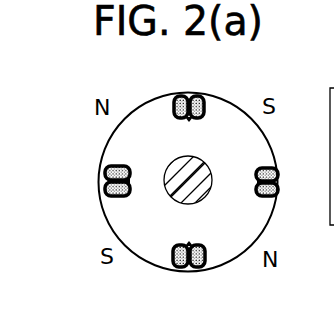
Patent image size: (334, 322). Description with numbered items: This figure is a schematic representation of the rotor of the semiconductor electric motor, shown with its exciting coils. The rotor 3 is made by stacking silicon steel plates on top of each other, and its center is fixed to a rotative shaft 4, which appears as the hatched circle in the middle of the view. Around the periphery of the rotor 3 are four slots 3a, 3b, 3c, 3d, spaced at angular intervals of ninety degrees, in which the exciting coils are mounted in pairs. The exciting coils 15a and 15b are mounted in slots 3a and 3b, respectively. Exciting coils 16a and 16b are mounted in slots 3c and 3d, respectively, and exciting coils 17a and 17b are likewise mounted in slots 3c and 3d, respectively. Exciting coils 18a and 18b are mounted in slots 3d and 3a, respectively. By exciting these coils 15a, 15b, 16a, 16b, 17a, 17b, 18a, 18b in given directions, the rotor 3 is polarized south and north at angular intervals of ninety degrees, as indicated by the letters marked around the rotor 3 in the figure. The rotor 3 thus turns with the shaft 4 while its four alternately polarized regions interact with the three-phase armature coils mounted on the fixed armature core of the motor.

The rotor 3 is at (245, 266).
The slot 3a is at (189, 122).
The slot 3b is at (257, 182).
The slot 3c is at (189, 244).
The slot 3d is at (132, 174).
The rotative shaft 4 is at (205, 196).
The exciting coil 15a is at (202, 98).
The exciting coil 15b is at (270, 168).
The exciting coil 16a is at (272, 198).
The exciting coil 16b is at (202, 268).
The exciting coil 17a is at (175, 267).
The exciting coil 17b is at (106, 191).
The exciting coil 18a is at (106, 169).
The exciting coil 18b is at (176, 98).